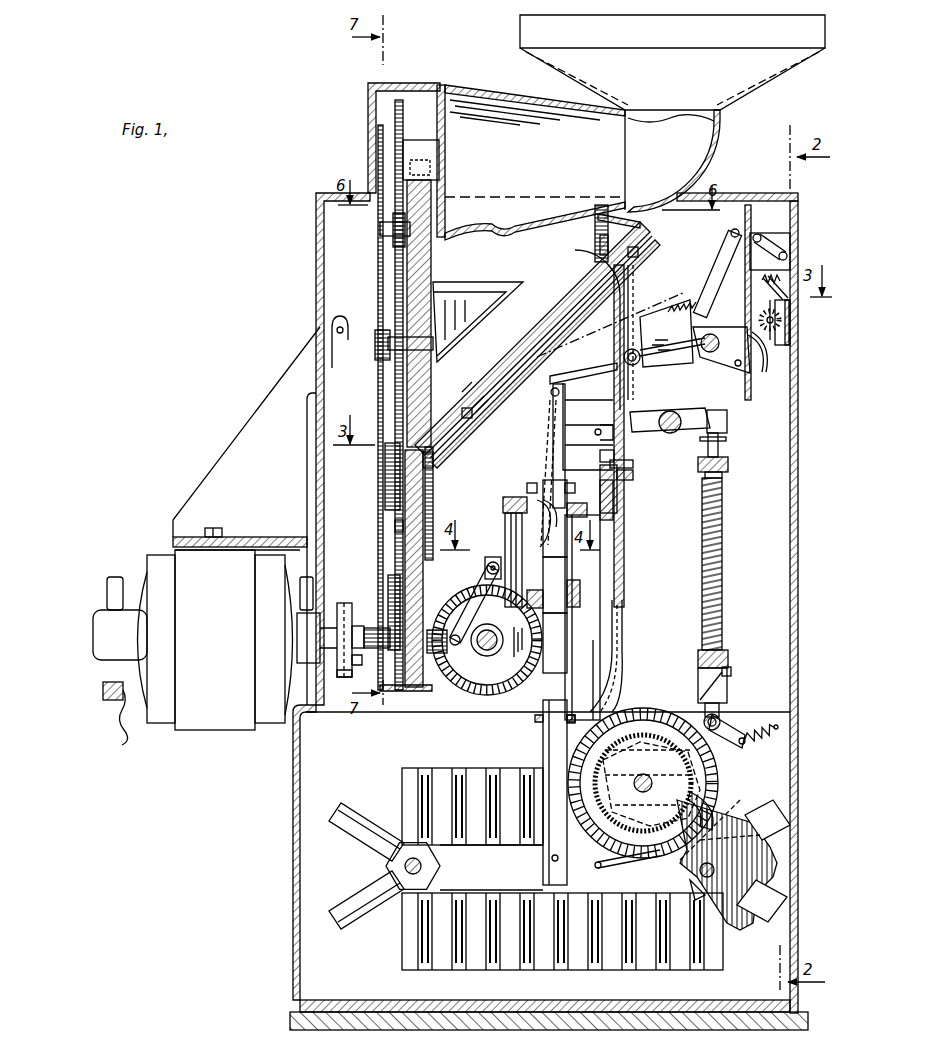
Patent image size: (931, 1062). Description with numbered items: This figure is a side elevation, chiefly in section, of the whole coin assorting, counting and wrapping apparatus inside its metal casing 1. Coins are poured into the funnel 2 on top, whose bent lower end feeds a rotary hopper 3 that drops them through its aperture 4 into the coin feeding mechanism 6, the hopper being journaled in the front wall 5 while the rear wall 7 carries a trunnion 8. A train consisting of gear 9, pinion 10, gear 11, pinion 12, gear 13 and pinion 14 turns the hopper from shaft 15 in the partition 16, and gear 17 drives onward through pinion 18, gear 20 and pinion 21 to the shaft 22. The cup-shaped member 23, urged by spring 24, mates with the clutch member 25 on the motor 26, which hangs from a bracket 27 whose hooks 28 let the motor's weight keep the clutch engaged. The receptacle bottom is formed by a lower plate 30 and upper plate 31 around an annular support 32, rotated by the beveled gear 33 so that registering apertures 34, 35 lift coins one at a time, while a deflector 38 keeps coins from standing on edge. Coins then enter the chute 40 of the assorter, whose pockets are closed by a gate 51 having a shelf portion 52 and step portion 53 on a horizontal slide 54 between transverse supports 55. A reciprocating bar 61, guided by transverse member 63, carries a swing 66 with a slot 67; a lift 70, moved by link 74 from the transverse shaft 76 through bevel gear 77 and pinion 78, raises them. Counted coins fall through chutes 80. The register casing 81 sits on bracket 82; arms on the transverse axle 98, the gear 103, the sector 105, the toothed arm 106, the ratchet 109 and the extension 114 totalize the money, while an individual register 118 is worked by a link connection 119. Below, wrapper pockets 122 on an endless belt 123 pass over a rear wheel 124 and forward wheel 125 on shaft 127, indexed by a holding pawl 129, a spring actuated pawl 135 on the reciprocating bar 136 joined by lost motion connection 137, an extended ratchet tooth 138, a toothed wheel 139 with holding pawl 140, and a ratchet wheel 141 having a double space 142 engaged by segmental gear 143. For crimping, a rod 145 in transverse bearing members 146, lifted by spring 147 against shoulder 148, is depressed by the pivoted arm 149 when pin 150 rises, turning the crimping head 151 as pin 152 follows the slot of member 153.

The casing 1 is at (798, 515).
The funnel 2 is at (690, 118).
The rotary hopper 3 is at (519, 99).
The aperture 4 is at (483, 230).
The front wall 5 is at (640, 228).
The coin feeding mechanism 6 is at (532, 258).
The rear wall 7 is at (432, 272).
The trunnion 8 is at (418, 140).
The gear 9 is at (378, 107).
The pinion 10 is at (395, 282).
The gear 11 is at (378, 263).
The pinion 12 is at (382, 358).
The gear 13 is at (375, 333).
The pinion 14 is at (385, 498).
The shaft 15 is at (434, 480).
The partition 16 is at (416, 530).
The gear 17 is at (400, 528).
The pinion 18 is at (395, 605).
The gear 20 is at (395, 692).
The pinion 21 is at (372, 628).
The shaft 22 is at (360, 627).
The cup-shaped member 23 is at (346, 604).
The spring 24 is at (355, 665).
The clutch member 25 is at (337, 605).
The motor 26 is at (215, 715).
The bracket 27 is at (215, 476).
The hooks 28 is at (346, 319).
The lower plate 30 is at (540, 364).
The upper plate 31 is at (505, 350).
The annular support 32 is at (482, 401).
The beveled gear 33 is at (440, 460).
The apertures 34 is at (592, 258).
The apertures 35 is at (638, 252).
The deflector 38 is at (457, 308).
The chute 40 is at (632, 306).
The gate 51 is at (633, 476).
The shelf portion 52 is at (626, 464).
The step portion 53 is at (600, 455).
The horizontal slide 54 is at (597, 489).
The transverse supports 55 is at (571, 525).
The reciprocating bar 61 is at (566, 397).
The transverse member 63 is at (573, 585).
The swing 66 is at (546, 458).
The slot 67 is at (530, 527).
The lift 70 is at (532, 560).
The link 74 is at (478, 612).
The transverse shaft 76 is at (487, 651).
The bevel gear 77 is at (460, 690).
The pinion 78 is at (437, 628).
The chutes 80 is at (626, 570).
The register casing 81 is at (790, 336).
The bracket 82 is at (752, 396).
The transverse axle 98 is at (634, 366).
The gear 103 is at (648, 335).
The sector 105 is at (726, 362).
The arm 106 is at (759, 369).
The ratchet 109 is at (764, 320).
The extension 114 is at (705, 348).
The individual register 118 is at (790, 241).
The link connection 119 is at (718, 279).
The pocket 122 is at (402, 787).
The endless belt 123 is at (475, 845).
The rear wheel 124 is at (441, 870).
The forward wheel 125 is at (692, 888).
The shaft 127 is at (700, 870).
The holding pawl 129 is at (611, 866).
The spring actuated pawl 135 is at (562, 872).
The reciprocating bar 136 is at (560, 690).
The lost motion connection 137 is at (561, 638).
The extended ratchet tooth 138 is at (625, 810).
The toothed wheel 139 is at (571, 723).
The holding pawl 140 is at (705, 728).
The ratchet wheel 141 is at (642, 822).
The double space 142 is at (681, 812).
The segmental gear 143 is at (731, 811).
The rod 145 is at (720, 443).
The transverse bearing members 146 is at (728, 465).
The spring 147 is at (722, 622).
The shoulder 148 is at (722, 478).
The pivoted arm 149 is at (698, 410).
The pin 150 is at (603, 432).
The crimping head 151 is at (722, 748).
The pin 152 is at (731, 672).
The member 153 is at (728, 695).